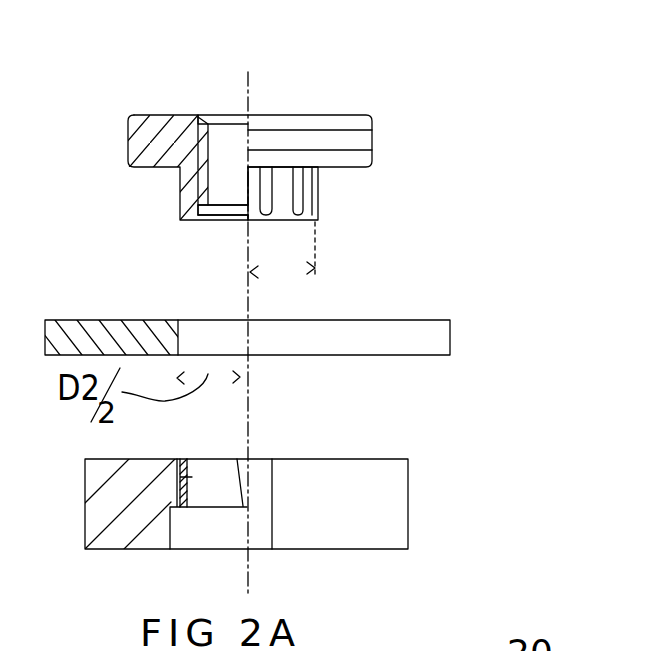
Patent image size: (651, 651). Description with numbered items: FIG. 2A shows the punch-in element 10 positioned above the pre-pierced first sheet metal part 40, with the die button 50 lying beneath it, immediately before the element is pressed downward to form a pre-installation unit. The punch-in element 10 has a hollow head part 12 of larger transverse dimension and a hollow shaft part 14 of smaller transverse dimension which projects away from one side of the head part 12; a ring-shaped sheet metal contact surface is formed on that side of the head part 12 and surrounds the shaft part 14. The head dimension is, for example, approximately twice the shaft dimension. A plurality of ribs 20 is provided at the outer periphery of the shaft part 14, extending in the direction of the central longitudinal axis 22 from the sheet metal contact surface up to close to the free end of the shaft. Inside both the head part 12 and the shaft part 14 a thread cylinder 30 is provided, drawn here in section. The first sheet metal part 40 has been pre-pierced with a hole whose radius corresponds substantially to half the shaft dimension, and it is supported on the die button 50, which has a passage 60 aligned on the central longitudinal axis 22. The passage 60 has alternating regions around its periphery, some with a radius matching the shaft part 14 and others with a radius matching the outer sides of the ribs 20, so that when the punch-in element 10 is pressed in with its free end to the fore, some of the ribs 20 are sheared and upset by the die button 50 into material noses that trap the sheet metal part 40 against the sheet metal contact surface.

The punch-in element 10 is at (263, 149).
The head part 12 is at (138, 139).
The shaft part 14 is at (285, 202).
The ribs 20 is at (320, 197).
The central longitudinal axis 22 is at (251, 92).
The thread cylinder 30 is at (209, 168).
The first sheet metal part 40 is at (445, 345).
The die button 50 is at (296, 474).
The passage 60 is at (205, 482).